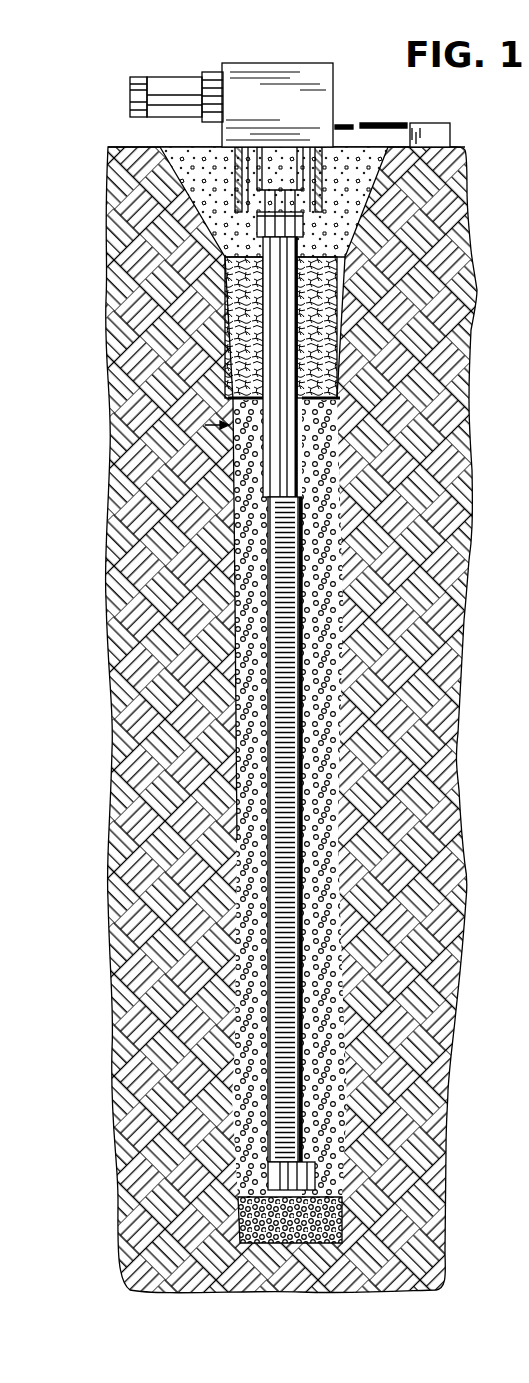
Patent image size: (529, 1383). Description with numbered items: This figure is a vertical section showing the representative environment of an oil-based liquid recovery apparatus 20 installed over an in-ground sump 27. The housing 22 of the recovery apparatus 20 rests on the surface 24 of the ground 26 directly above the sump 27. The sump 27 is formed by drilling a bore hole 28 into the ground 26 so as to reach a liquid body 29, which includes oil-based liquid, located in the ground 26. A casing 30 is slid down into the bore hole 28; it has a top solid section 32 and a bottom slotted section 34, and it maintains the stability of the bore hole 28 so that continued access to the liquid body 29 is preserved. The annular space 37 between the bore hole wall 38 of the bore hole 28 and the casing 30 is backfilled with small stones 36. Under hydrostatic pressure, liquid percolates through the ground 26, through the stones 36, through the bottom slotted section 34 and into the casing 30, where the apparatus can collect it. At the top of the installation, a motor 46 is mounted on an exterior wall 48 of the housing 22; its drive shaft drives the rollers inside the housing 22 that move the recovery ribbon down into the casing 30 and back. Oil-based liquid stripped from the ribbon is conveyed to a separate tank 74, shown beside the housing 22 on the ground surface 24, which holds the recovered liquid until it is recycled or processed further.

The oil-based liquid recovery apparatus 20 is at (216, 48).
The housing 22 is at (324, 63).
The surface 24 is at (192, 146).
The ground 26 is at (225, 298).
The sump 27 is at (220, 375).
The bore hole 28 is at (236, 522).
The liquid body 29 is at (197, 1128).
The casing 30 is at (258, 655).
The top solid section 32 is at (242, 325).
The bottom slotted section 34 is at (275, 745).
The small stones 36 is at (238, 576).
The space 37 is at (233, 406).
The bore hole wall 38 is at (236, 470).
The motor 46 is at (132, 80).
The exterior wall 48 is at (222, 127).
The tank 74 is at (450, 135).